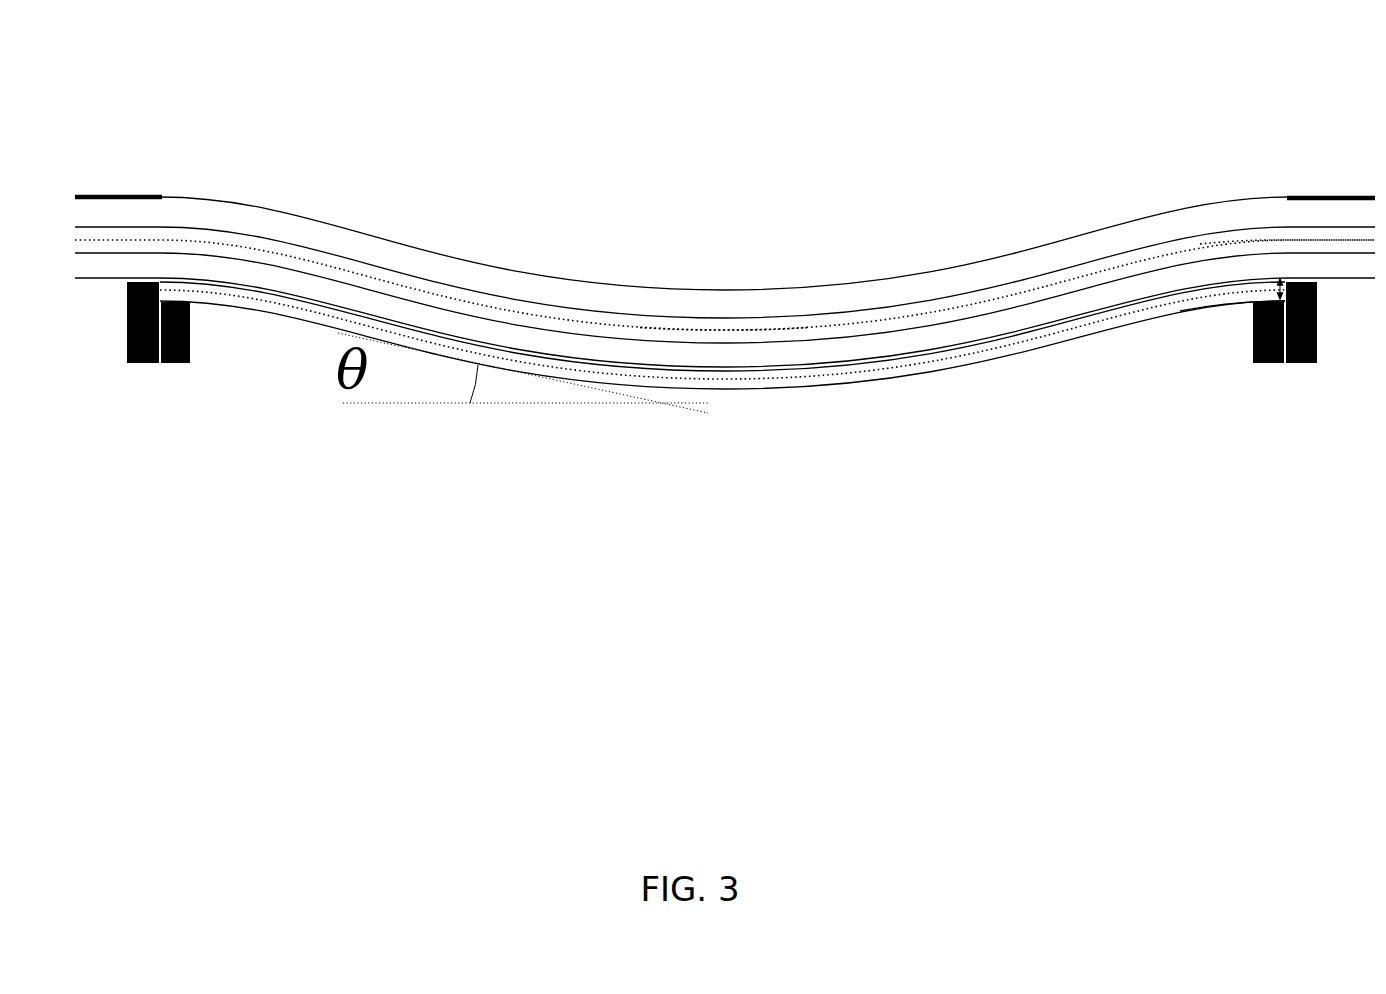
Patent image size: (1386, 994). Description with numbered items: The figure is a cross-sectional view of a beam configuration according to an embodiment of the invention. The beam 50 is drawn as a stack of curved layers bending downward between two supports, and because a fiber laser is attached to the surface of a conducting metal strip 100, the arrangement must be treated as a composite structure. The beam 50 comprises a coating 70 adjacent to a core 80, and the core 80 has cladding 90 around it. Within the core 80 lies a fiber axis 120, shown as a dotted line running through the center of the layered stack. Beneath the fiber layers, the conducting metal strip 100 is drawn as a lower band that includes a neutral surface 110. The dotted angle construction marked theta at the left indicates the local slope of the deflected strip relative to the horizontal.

The beam 50 is at (725, 220).
The coating 70 is at (437, 259).
The core 80 is at (1016, 283).
The cladding 90 is at (734, 323).
The conducting metal strip 100 is at (1238, 310).
The neutral surface 110 is at (722, 427).
The fiber axis 120 is at (1243, 233).